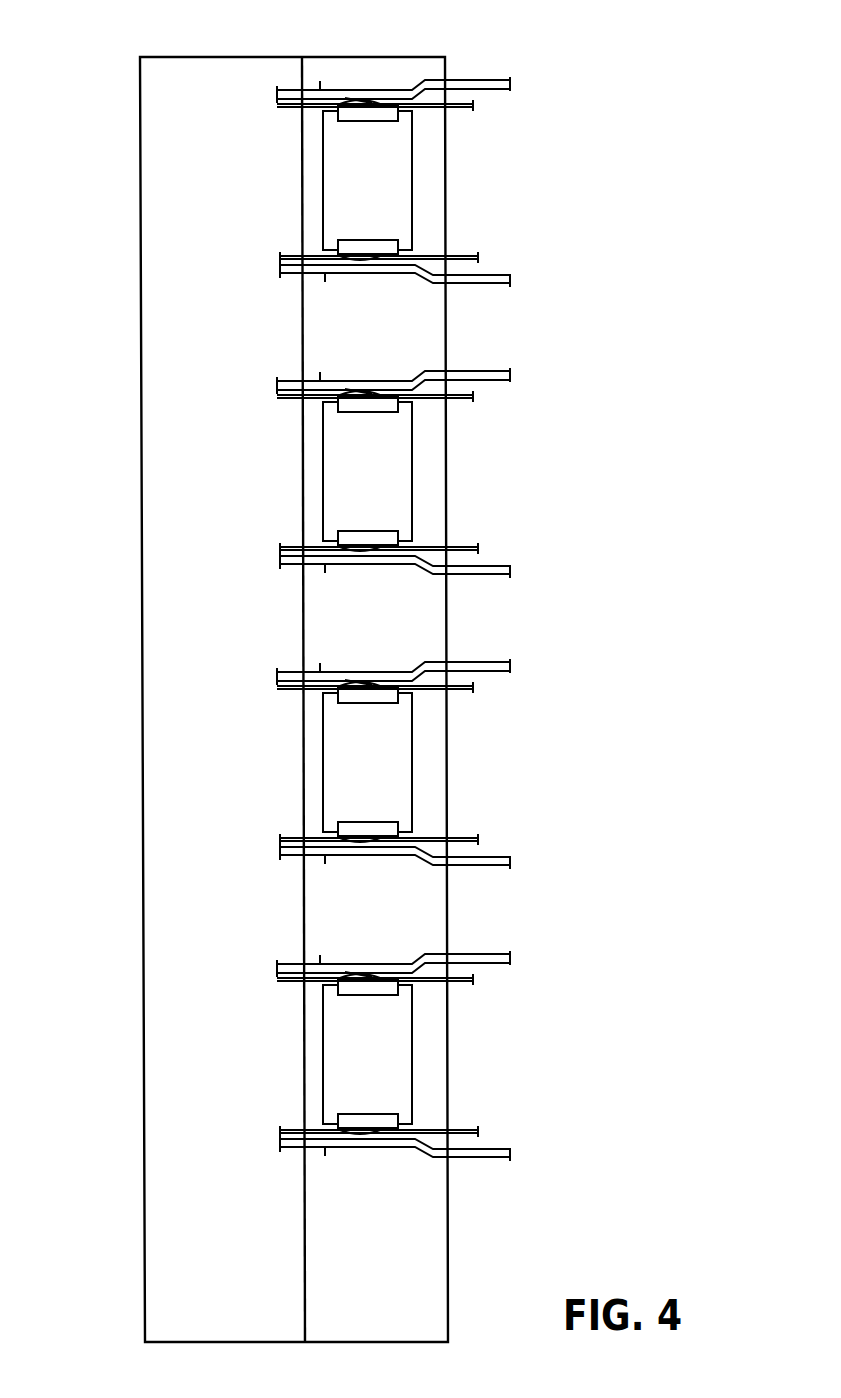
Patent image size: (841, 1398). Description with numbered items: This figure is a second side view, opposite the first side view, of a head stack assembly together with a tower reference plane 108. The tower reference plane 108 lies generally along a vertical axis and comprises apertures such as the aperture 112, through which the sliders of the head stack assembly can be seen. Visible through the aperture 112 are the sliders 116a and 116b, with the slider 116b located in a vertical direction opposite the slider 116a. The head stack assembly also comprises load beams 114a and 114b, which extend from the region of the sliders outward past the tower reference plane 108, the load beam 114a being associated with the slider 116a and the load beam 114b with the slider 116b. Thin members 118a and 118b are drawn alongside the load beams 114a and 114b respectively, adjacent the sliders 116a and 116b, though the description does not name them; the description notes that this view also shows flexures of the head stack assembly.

The tower reference plane 108 is at (411, 57).
The aperture 112 is at (372, 1080).
The load beam 114a is at (494, 1160).
The load beam 114b is at (487, 955).
The slider 116a is at (353, 1118).
The slider 116b is at (372, 993).
The first lead 118a is at (464, 1128).
The second lead 118b is at (458, 982).